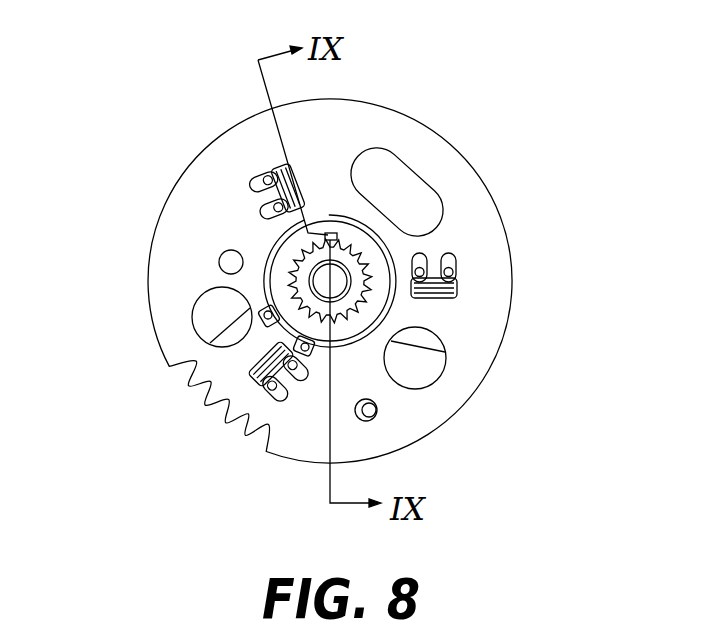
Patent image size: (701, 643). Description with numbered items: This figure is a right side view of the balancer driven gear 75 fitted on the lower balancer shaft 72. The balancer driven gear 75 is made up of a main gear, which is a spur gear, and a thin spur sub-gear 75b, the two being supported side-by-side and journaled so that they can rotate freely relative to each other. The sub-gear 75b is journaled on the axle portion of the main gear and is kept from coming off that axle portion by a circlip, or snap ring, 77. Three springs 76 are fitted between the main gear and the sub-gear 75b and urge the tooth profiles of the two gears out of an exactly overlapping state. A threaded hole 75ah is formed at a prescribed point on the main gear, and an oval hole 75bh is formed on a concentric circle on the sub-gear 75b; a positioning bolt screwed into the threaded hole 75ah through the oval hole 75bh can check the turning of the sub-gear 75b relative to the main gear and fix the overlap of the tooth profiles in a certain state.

The balancer driven gear 75 is at (375, 92).
The sub-gear 75b is at (168, 254).
The springs 76 is at (250, 196).
The circlip 77 is at (392, 249).
The lower balancer shaft 72 is at (357, 302).
The threaded hole 75ah is at (378, 410).
The oval hole 75bh is at (372, 420).